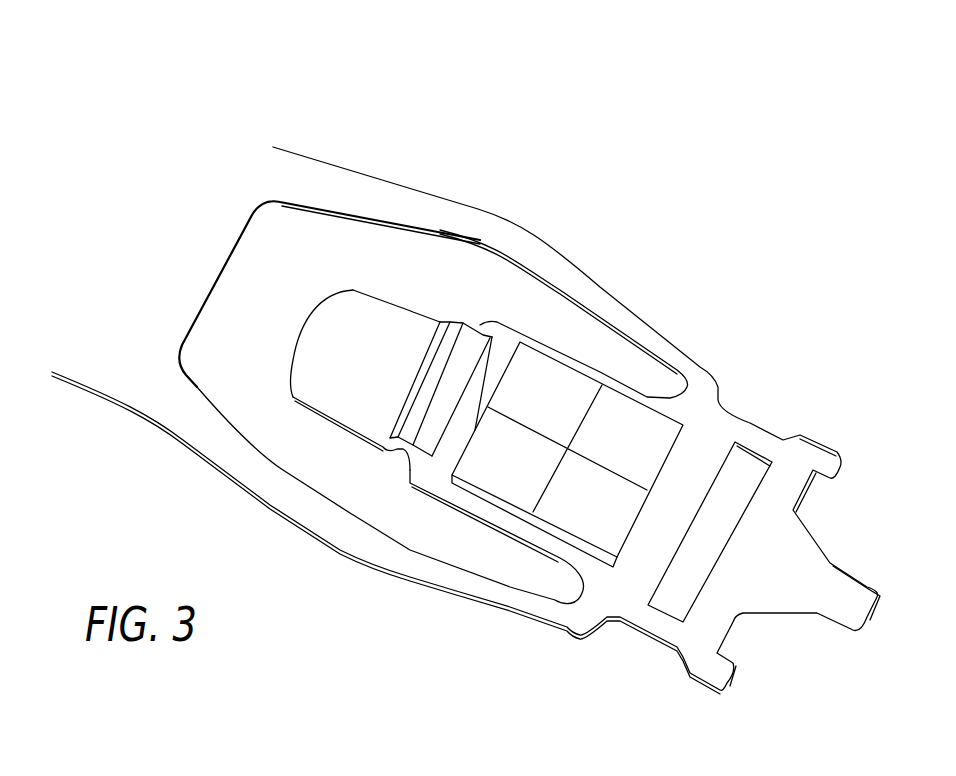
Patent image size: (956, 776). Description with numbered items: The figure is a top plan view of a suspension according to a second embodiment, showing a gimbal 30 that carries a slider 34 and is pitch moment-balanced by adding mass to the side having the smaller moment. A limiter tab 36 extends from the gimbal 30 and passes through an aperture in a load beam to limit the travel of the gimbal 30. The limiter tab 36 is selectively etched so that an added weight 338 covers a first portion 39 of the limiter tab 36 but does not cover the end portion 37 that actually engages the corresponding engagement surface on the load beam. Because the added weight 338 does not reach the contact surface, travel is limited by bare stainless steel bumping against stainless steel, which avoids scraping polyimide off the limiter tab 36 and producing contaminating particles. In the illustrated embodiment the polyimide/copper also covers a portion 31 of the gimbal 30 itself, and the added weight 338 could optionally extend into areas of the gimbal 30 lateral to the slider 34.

The gimbal 30 is at (427, 477).
The portion of gimbal 31 is at (470, 340).
The slider 34 is at (615, 418).
The limiter tab 36 is at (302, 383).
The end portion of limiter tab 37 is at (322, 345).
The first portion of limiter tab 39 is at (360, 353).
The added weight 338 is at (372, 400).